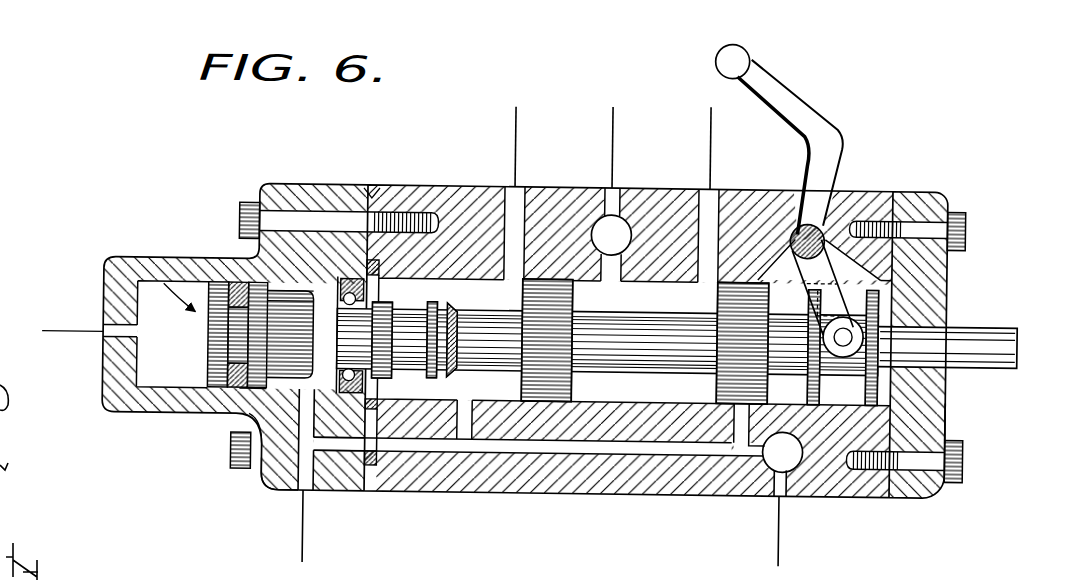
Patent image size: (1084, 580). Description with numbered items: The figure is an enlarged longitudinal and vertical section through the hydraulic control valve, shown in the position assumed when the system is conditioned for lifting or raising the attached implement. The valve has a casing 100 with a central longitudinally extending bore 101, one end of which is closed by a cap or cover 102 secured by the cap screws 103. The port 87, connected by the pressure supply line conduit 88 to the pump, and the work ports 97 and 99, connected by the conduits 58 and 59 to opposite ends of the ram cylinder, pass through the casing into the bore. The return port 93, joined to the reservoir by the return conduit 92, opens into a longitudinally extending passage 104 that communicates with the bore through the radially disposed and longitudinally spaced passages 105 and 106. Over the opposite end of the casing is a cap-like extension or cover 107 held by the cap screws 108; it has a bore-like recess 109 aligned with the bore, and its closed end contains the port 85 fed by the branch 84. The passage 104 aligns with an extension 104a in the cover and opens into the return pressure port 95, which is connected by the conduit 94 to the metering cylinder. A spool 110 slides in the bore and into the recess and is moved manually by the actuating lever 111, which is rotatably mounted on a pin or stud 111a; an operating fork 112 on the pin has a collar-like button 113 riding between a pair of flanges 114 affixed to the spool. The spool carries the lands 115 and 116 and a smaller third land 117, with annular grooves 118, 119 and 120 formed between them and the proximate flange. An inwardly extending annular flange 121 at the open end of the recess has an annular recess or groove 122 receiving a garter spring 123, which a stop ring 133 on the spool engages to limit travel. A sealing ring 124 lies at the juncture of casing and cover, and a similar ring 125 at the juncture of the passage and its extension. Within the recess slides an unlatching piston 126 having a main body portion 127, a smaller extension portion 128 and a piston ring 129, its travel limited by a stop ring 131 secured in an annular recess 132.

The conduit 58 is at (514, 129).
The conduit 59 is at (709, 115).
The branch 84 is at (78, 342).
The port 85 is at (102, 330).
The port 87 is at (618, 191).
The pressure supply line conduit 88 is at (611, 128).
The return conduit 92 is at (780, 526).
The return port 93 is at (788, 489).
The conduit 94 is at (305, 528).
The return pressure port 95 is at (303, 491).
The work port 97 is at (519, 189).
The work port 99 is at (716, 186).
The casing 100 is at (629, 491).
The central longitudinally extending bore 101 is at (898, 385).
The cap or cover 102 is at (946, 414).
The cap screws 103 is at (946, 203).
The longitudinally extending passage 104 is at (598, 447).
The extension 104a is at (344, 447).
The passage 105 is at (467, 418).
The passage 106 is at (738, 421).
The cap-like extension or cover 107 is at (166, 407).
The cap screws 108 is at (247, 201).
The bore-like recess 109 is at (160, 385).
The spool 110 is at (891, 339).
The actuating lever 111 is at (793, 88).
The pin or stud 111a is at (798, 225).
The operating fork 112 is at (821, 231).
The collar-like button 113 is at (861, 319).
The flanges 114 is at (810, 294).
The land 115 is at (718, 378).
The land 116 is at (538, 366).
The third land 117 is at (384, 325).
The annular groove 118 is at (429, 326).
The annular groove 119 is at (604, 312).
The annular groove 120 is at (798, 366).
The annular flange 121 is at (290, 335).
The annular recess or groove 122 is at (363, 376).
The garter spring 123 is at (380, 270).
The ring 124 is at (369, 185).
The ring 125 is at (372, 465).
The unlatching piston 126 is at (139, 264).
The main body portion 127 is at (219, 294).
The extension portion 128 is at (289, 308).
The piston ring 129 is at (265, 384).
The stop ring 131 is at (270, 404).
The annular recess 132 is at (261, 478).
The stop ring 133 is at (459, 318).